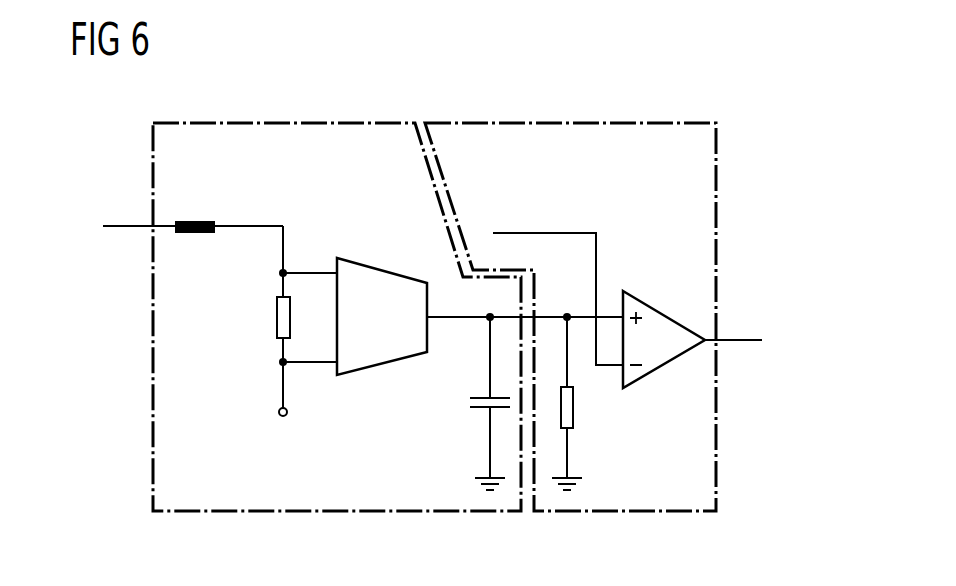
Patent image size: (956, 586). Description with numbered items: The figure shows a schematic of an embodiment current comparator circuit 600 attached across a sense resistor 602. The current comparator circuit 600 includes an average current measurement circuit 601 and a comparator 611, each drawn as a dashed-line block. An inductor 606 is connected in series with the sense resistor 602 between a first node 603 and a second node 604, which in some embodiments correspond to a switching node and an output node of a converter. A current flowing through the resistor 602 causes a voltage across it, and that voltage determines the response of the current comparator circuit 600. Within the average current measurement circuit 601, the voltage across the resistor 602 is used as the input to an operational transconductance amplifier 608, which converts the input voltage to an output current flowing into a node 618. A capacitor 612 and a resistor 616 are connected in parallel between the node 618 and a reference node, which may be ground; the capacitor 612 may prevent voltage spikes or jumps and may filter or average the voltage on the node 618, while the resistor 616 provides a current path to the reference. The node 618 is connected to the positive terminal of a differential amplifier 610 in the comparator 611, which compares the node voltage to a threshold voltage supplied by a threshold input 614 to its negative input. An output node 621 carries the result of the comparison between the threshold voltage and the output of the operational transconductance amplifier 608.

The current comparator circuit 600 is at (664, 95).
The average current measurement circuit 601 is at (331, 122).
The comparator 611 is at (553, 122).
The first node 603 is at (120, 231).
The inductor 606 is at (194, 220).
The sense resistor 602 is at (276, 308).
The second node 604 is at (282, 392).
The operational transconductance amplifier (OTA) 608 is at (383, 272).
The capacitor 612 is at (471, 397).
The node 618 is at (565, 314).
The threshold input 614 is at (583, 233).
The resistor 616 is at (578, 412).
The differential amplifier 610 is at (657, 311).
The output node 621 is at (742, 339).